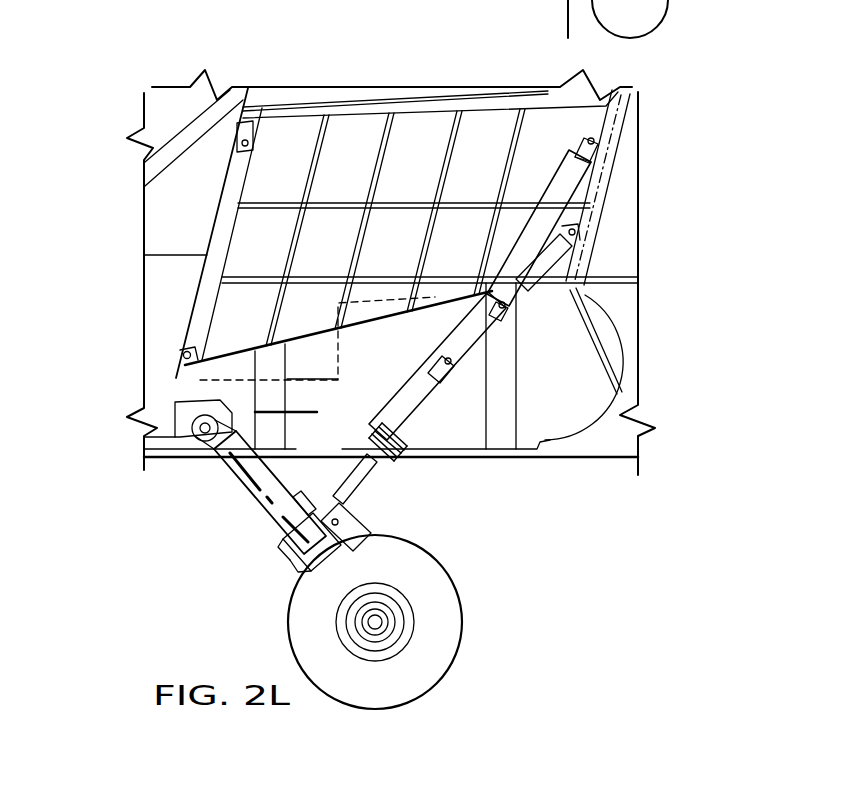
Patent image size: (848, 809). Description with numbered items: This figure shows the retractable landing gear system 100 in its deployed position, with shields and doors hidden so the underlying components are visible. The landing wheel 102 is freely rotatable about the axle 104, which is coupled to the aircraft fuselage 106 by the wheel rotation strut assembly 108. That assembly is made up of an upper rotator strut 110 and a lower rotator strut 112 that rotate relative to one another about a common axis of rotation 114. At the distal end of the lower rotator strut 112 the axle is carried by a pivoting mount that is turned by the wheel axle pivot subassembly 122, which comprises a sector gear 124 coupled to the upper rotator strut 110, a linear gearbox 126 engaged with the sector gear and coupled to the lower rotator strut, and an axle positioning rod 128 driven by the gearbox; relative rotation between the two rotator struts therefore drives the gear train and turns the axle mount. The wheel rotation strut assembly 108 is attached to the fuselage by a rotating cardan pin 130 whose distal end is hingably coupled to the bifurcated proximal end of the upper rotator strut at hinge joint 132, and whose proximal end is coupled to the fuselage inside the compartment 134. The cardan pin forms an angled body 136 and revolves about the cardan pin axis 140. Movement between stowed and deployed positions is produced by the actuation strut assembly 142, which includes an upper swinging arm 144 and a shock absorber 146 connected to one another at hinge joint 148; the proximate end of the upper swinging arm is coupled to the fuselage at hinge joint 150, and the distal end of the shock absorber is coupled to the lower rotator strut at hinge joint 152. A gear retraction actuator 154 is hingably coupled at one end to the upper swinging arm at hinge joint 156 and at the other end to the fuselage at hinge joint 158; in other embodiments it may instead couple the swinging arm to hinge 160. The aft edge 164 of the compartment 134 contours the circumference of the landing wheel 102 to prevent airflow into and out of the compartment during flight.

The retractable landing gear system 100 is at (160, 56).
The landing wheel 102 is at (462, 630).
The axle 104 is at (378, 622).
The aircraft fuselage 106 is at (144, 224).
The wheel rotation strut assembly 108 is at (263, 507).
The upper rotator strut 110 is at (257, 500).
The lower rotator strut 112 is at (293, 576).
The common axis of rotation 114 is at (242, 480).
The wheel axle pivot subassembly 122 is at (287, 560).
The sector gear 124 is at (280, 552).
The linear gearbox 126 is at (364, 536).
The axle positioning rod 128 is at (302, 492).
The cardan pin 130 is at (131, 410).
The hinge joint 132 is at (200, 434).
The compartment 134 is at (648, 364).
The angled body 136 is at (193, 403).
The cardan pin axis 140 is at (267, 408).
The actuation strut assembly 142 is at (408, 374).
The upper swinging arm 144 is at (550, 184).
The shock absorber 146 is at (392, 414).
The hinge joint 148 is at (450, 372).
The hinge joint 150 is at (594, 142).
The hinge joint 152 is at (360, 507).
The gear retraction actuator 154 is at (556, 266).
The hinge joint 156 is at (500, 312).
The hinge joint 158 is at (575, 232).
The hinge 160 is at (248, 136).
The aft edge 164 is at (612, 335).